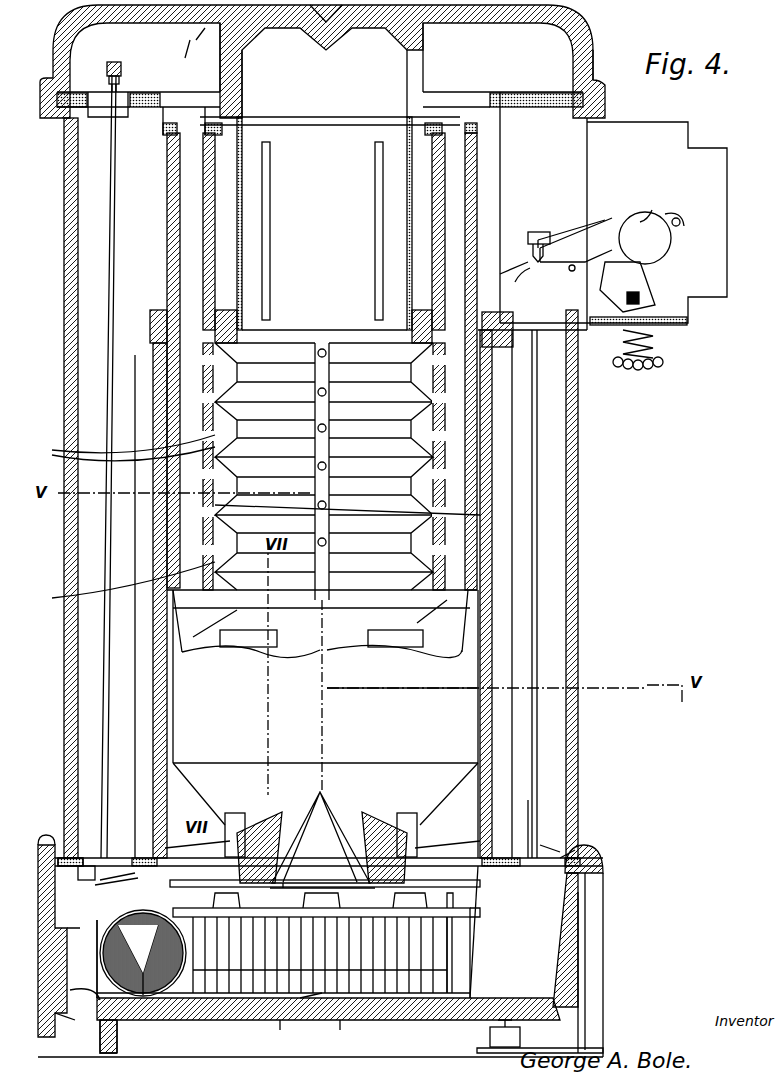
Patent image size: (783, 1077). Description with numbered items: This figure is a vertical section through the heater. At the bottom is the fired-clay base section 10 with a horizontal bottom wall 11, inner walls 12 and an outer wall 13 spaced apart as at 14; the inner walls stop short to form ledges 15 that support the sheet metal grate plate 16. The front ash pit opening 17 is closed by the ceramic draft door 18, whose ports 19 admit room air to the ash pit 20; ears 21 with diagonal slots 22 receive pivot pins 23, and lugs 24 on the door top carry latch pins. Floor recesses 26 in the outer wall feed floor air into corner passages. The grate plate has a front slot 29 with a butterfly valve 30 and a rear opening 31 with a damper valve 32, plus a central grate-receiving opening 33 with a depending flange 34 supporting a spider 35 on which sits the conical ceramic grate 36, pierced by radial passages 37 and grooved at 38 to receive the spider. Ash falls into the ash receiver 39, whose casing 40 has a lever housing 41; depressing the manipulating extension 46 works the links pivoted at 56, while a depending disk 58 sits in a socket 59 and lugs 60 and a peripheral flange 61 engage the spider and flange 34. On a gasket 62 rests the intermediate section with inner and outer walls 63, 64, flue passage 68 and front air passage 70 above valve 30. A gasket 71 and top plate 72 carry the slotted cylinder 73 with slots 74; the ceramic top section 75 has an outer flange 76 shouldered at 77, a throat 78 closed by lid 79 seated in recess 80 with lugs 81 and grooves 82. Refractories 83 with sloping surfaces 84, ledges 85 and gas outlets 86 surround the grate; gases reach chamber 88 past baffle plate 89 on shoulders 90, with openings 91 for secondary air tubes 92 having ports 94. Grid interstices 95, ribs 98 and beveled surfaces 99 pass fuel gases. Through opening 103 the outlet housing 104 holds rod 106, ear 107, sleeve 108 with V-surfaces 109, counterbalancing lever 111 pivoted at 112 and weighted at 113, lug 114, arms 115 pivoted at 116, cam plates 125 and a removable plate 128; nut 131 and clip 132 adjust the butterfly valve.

The base section 10 is at (603, 908).
The horizontal bottom wall 11 is at (512, 1005).
The inner walls 12 is at (580, 952).
The vertical outer wall 13 is at (590, 932).
The space between walls 14 is at (580, 975).
The ledges 15 is at (603, 886).
The grate plate 16 is at (565, 850).
The ash pit opening 17 is at (88, 1045).
The draft door 18 is at (103, 966).
The ports 19 is at (112, 922).
The ash pit 20 is at (472, 948).
The ears 21 is at (83, 964).
The slots 22 is at (68, 1032).
The pivot pins 23 is at (75, 1022).
The lugs 24 is at (86, 880).
The floor recesses 26 is at (592, 1027).
The rectangular slot 29 is at (70, 858).
The butterfly valve 30 is at (110, 858).
The rectangular opening 31 is at (432, 832).
The airflow-controlling valve 32 is at (548, 850).
The grate-receiving opening 33 is at (428, 852).
The depending flange 34 is at (138, 882).
The spider 35 is at (480, 892).
The grate 36 is at (270, 815).
The radially disposed passages 37 is at (340, 837).
The grooves 38 is at (298, 870).
The ash receiver 39 is at (378, 955).
The outer casing 40 is at (320, 955).
The lever housing 41 is at (180, 1012).
The manipulating extension 46 is at (108, 947).
The pivot 56 is at (315, 1003).
The depending disk 58 is at (310, 1021).
The centering and stop socket 59 is at (330, 1021).
The upstanding lugs 60 is at (250, 916).
The peripheral flange 61 is at (472, 914).
The mineral fiber gasket 62 is at (603, 864).
The inner walls 63 is at (493, 652).
The outer walls 64 is at (66, 573).
The flue gas passage 68 is at (555, 479).
The air passage 70 is at (85, 530).
The gasket 71 is at (66, 120).
The top plate 72 is at (160, 95).
The cylinder 73 is at (240, 171).
The slots 74 is at (271, 228).
The top section 75 is at (590, 38).
The outer flange 76 is at (60, 40).
The shoulder 77 is at (80, 90).
The fuel-receiving throat 78 is at (424, 68).
The lid 79 is at (377, 34).
The recess 80 is at (243, 56).
The upstanding lugs 81 is at (448, 58).
The grooves 82 is at (196, 40).
The segmental refractories 83 is at (480, 675).
The inwardly sloping surfaces 84 is at (432, 806).
The ledges 85 is at (313, 672).
The gas outlets 86 is at (265, 648).
The flue gas chamber 88 is at (407, 263).
The baffle plate 89 is at (512, 335).
The shoulders 90 is at (493, 362).
The openings 91 is at (412, 328).
The secondary air-conducting tubes 92 is at (180, 200).
The ports 94 is at (212, 347).
The interstices 95 is at (121, 448).
The ribs 98 is at (480, 515).
The beveled surfaces 99 is at (121, 584).
The opening 103 is at (590, 118).
The furnace gas outlet housing 104 is at (690, 126).
The rod 106 is at (537, 578).
The eccentric ear 107 is at (548, 845).
The bearing sleeve 108 is at (560, 228).
The V-shaped lower surfaces 109 is at (576, 244).
The counterbalancing lever 111 is at (656, 269).
The pivot 112 is at (513, 282).
The weight 113 is at (672, 243).
The lug 114 is at (531, 236).
The arms 115 is at (652, 210).
The pivot 116 is at (682, 224).
The cam plates 125 is at (640, 298).
The removable plate 128 is at (690, 333).
The nut 131 is at (118, 62).
The clip 132 is at (122, 82).